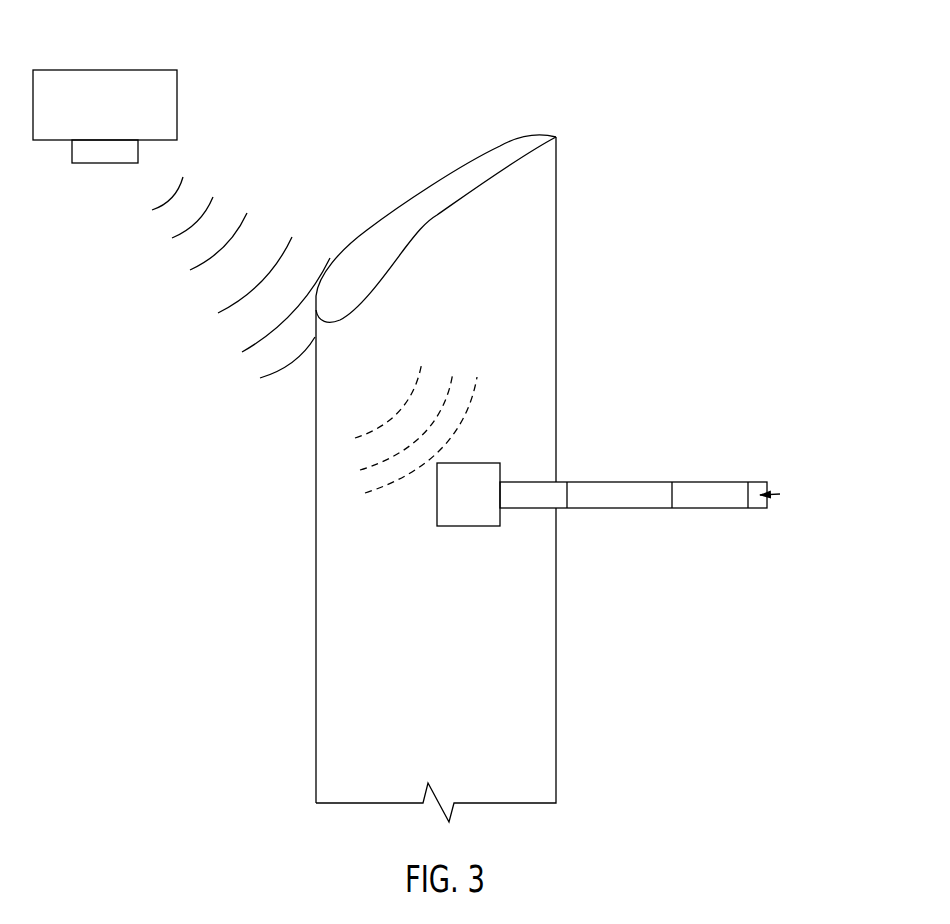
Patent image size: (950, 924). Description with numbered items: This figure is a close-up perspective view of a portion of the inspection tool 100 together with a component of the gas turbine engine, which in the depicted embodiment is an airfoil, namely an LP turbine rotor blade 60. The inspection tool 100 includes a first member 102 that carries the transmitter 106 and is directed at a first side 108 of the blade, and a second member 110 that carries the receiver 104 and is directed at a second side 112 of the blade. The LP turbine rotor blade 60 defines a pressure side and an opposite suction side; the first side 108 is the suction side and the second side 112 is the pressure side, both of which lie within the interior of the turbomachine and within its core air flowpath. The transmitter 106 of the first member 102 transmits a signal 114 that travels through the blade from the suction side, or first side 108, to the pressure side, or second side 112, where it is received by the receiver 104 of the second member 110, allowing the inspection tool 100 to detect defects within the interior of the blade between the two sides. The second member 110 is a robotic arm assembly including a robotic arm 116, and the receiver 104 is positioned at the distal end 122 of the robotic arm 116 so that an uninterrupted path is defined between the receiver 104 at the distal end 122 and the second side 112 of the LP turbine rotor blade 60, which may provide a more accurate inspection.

The LP turbine rotor blade 60 is at (537, 230).
The inspection tool 100 is at (686, 125).
The first member 102 is at (107, 70).
The receiver 104 is at (472, 518).
The transmitter 106 is at (100, 165).
The first side 108 is at (313, 504).
The second member 110 is at (770, 396).
The second side 112 is at (540, 366).
The signal 114 is at (212, 200).
The robotic arm 116 is at (677, 421).
The distal end 122 is at (540, 548).